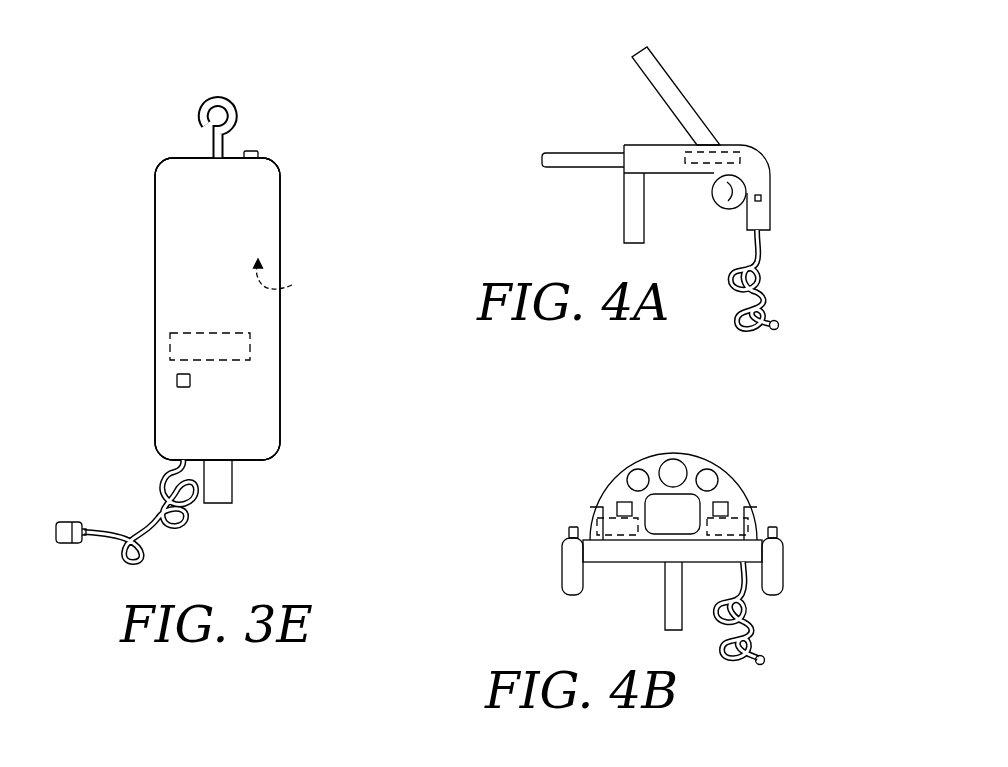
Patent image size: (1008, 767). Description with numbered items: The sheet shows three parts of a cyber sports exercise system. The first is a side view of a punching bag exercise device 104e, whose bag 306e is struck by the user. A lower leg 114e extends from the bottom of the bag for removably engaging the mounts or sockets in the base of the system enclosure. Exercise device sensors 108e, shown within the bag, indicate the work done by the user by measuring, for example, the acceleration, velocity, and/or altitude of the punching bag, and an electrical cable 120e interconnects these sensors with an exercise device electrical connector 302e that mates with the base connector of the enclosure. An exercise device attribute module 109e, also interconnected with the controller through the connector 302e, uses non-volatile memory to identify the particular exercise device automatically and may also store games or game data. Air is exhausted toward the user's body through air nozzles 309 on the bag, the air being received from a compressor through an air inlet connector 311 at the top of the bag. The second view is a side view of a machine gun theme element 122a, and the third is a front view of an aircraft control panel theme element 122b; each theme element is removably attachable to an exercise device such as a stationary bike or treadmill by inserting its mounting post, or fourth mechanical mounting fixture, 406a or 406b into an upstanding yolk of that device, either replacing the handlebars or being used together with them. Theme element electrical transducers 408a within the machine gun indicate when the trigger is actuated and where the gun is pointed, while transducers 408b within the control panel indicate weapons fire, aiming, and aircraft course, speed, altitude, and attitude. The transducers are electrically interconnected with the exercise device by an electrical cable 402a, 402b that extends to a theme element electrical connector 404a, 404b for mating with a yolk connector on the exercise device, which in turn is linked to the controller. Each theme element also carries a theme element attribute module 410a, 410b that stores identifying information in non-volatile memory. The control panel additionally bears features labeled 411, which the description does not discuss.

In FIG. 3E, the punching bag exercise device 104e is at (140, 170).
In FIG. 3E, the bag 306e is at (185, 228).
In FIG. 3E, the air inlet connector 311 is at (252, 153).
In FIG. 3E, the air nozzles 309 is at (292, 285).
In FIG. 3E, the exercise device sensors 108e is at (212, 333).
In FIG. 3E, the exercise device attribute module 109e is at (180, 387).
In FIG. 3E, the lower leg 114e is at (225, 498).
In FIG. 3E, the electrical cable 120e is at (170, 527).
In FIG. 3E, the exercise device electrical connector 302e is at (58, 531).
In FIG. 4A, the machine gun theme element 122a is at (565, 115).
In FIG. 4A, the mounting post 406a is at (634, 222).
In FIG. 4A, the theme element electrical transducers 408a is at (735, 149).
In FIG. 4A, the theme element attribute module 410a is at (758, 200).
In FIG. 4A, the electrical cable 402a is at (767, 281).
In FIG. 4A, the theme element electrical connector 404a is at (775, 327).
In FIG. 4B, the aircraft control panel theme element 122b is at (572, 458).
In FIG. 4B, the theme element electrical transducers 408b is at (598, 506).
In FIG. 4B, the theme element attribute module 410b is at (748, 508).
In FIG. 4B, the clips 411 is at (573, 572).
In FIG. 4B, the mounting post 406b is at (672, 618).
In FIG. 4B, the electrical cable 402b is at (756, 614).
In FIG. 4B, the theme element electrical connector 404b is at (759, 661).